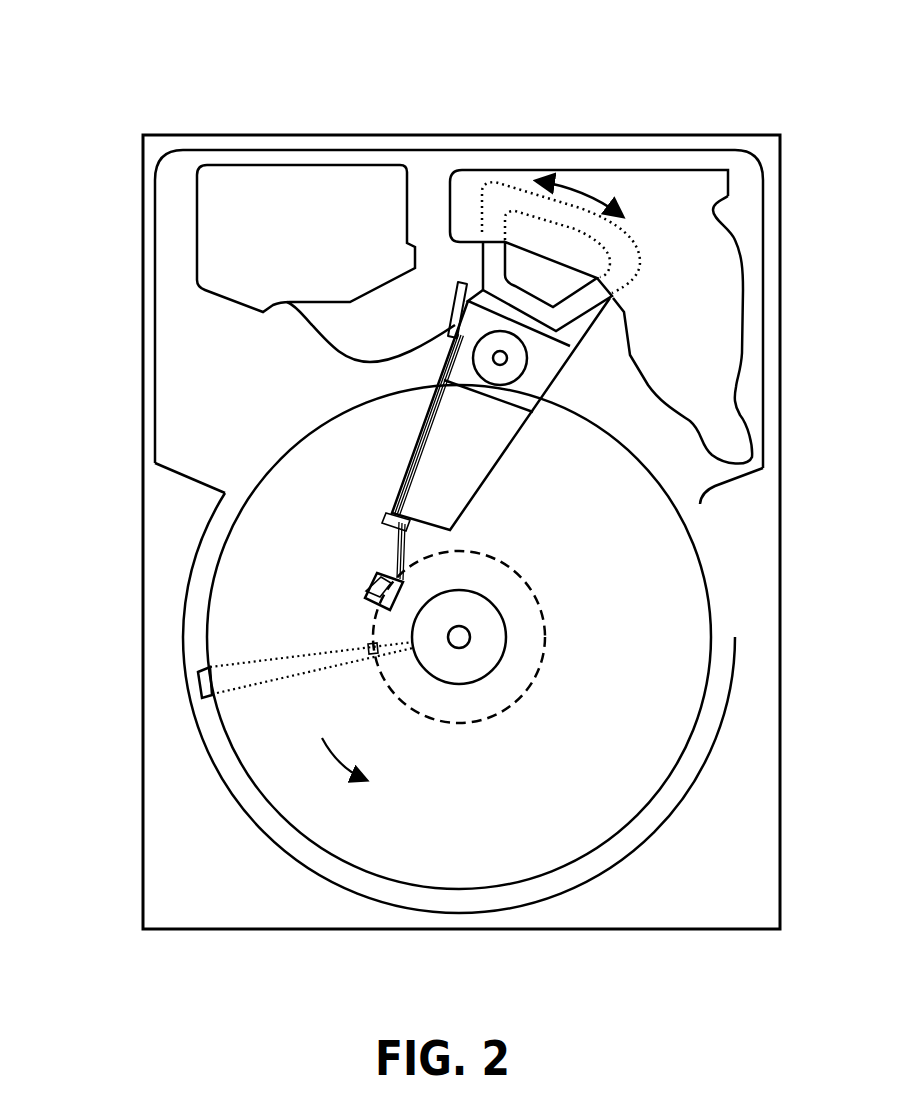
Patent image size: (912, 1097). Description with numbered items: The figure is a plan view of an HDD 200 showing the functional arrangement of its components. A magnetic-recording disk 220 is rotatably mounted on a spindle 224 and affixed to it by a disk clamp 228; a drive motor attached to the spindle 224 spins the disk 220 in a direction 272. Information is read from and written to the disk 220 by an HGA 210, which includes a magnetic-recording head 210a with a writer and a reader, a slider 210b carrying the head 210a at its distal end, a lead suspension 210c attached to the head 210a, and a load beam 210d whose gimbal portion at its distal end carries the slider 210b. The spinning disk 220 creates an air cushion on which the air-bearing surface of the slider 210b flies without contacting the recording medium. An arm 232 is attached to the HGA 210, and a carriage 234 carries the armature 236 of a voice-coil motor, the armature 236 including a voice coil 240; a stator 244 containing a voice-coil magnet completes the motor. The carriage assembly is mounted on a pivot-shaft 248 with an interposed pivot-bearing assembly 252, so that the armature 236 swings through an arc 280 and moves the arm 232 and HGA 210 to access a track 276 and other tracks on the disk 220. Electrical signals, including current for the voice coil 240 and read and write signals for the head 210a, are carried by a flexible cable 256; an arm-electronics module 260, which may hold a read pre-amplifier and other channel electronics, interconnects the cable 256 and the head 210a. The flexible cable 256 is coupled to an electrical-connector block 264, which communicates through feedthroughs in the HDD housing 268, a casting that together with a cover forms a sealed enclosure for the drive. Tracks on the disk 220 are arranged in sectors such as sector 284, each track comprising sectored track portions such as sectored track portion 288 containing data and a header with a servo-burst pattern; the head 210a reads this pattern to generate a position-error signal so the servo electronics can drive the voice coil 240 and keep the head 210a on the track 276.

The HDD 200 is at (108, 66).
The HGA 210 is at (235, 472).
The magnetic-recording head 210a is at (375, 587).
The slider 210b is at (398, 563).
The lead suspension 210c is at (408, 530).
The load beam 210d is at (388, 510).
The magnetic-recording disk 220 is at (640, 590).
The spindle 224 is at (462, 637).
The disk clamp 228 is at (485, 653).
The arm 232 is at (452, 473).
The carriage 234 is at (518, 390).
The armature 236 is at (467, 292).
The voice coil 240 is at (495, 250).
The stator 244 is at (708, 263).
The pivot-shaft 248 is at (507, 358).
The pivot-bearing assembly 252 is at (512, 372).
The flexible cable 256 is at (320, 332).
The arm-electronics module 260 is at (453, 324).
The electrical-connector block 264 is at (222, 237).
The HDD housing 268 is at (760, 151).
The direction 272 is at (373, 751).
The track 276 is at (536, 598).
The arc 280 is at (578, 188).
The sector 284 is at (197, 683).
The sectored track portion 288 is at (362, 647).